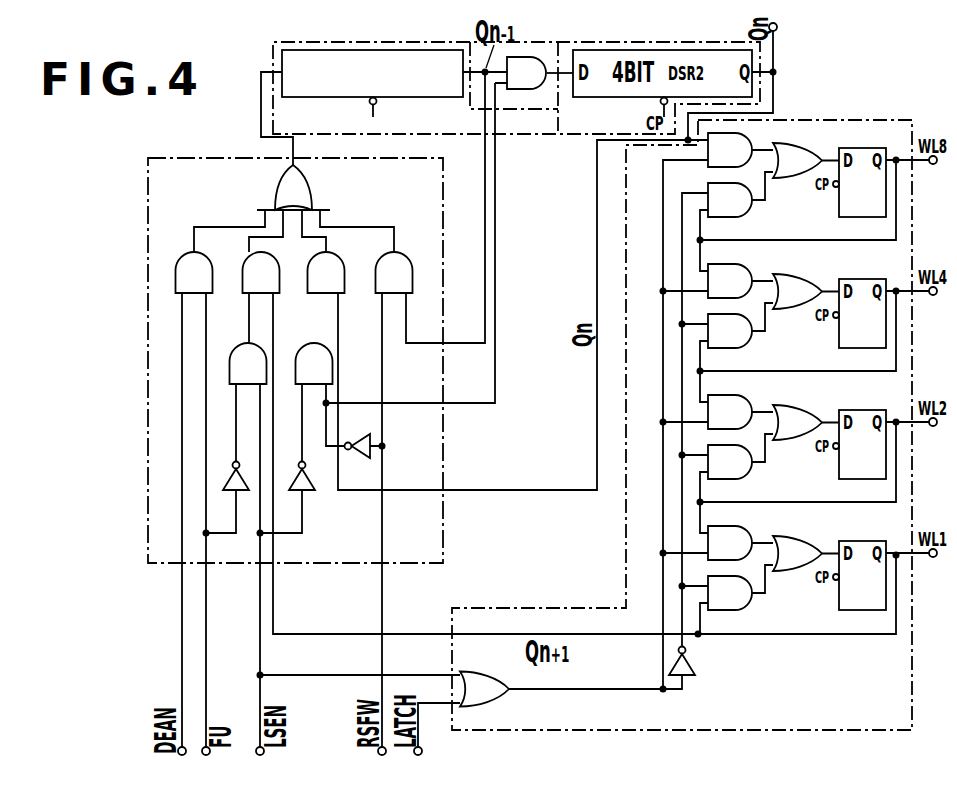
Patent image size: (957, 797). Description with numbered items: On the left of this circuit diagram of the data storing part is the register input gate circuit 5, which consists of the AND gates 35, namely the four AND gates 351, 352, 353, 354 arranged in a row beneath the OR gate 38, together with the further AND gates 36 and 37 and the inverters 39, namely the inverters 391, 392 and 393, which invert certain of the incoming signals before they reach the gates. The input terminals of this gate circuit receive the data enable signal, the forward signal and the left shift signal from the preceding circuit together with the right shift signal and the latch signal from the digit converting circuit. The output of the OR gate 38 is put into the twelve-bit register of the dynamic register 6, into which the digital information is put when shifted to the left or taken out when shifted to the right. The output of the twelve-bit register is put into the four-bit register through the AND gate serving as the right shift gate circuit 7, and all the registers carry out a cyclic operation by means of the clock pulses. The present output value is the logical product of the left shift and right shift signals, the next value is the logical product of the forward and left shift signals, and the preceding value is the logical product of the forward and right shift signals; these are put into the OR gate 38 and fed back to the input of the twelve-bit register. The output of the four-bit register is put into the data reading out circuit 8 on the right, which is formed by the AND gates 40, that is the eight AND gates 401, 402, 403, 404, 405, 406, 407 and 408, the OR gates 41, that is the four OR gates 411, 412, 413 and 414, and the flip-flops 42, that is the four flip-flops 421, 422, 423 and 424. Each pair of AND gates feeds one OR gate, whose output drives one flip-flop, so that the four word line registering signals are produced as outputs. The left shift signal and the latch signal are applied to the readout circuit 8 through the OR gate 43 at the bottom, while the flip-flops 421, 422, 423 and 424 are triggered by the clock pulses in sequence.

The register input gate circuit 5 is at (190, 170).
The dynamic register 6 is at (278, 53).
The right shift gate circuit 7 is at (550, 97).
The data reading out circuit 8 is at (857, 124).
The AND gates 35 is at (294, 274).
The AND gate 351 is at (194, 274).
The AND gate 352 is at (261, 274).
The AND gate 353 is at (326, 274).
The AND gate 354 is at (394, 274).
The AND gate 36 is at (248, 365).
The AND gate 37 is at (314, 365).
The OR gate 38 is at (293, 187).
The inverters 39 is at (311, 481).
The inverter 391 is at (244, 486).
The inverter 392 is at (306, 485).
The inverter 393 is at (368, 452).
The AND gates 40 is at (730, 373).
The AND gate 401 is at (730, 151).
The AND gate 402 is at (730, 201).
The AND gate 403 is at (730, 282).
The AND gate 404 is at (730, 332).
The AND gate 405 is at (730, 413).
The AND gate 406 is at (730, 463).
The AND gate 407 is at (730, 544).
The AND gate 408 is at (730, 594).
The OR gates 41 is at (797, 357).
The OR gate 411 is at (797, 161).
The OR gate 412 is at (797, 292).
The OR gate 413 is at (797, 423).
The OR gate 414 is at (797, 554).
The flip-flops 42 is at (850, 380).
The flip-flop 421 is at (850, 184).
The flip-flop 422 is at (850, 315).
The flip-flop 423 is at (850, 446).
The flip-flop 424 is at (850, 577).
The OR gate 43 is at (484, 690).